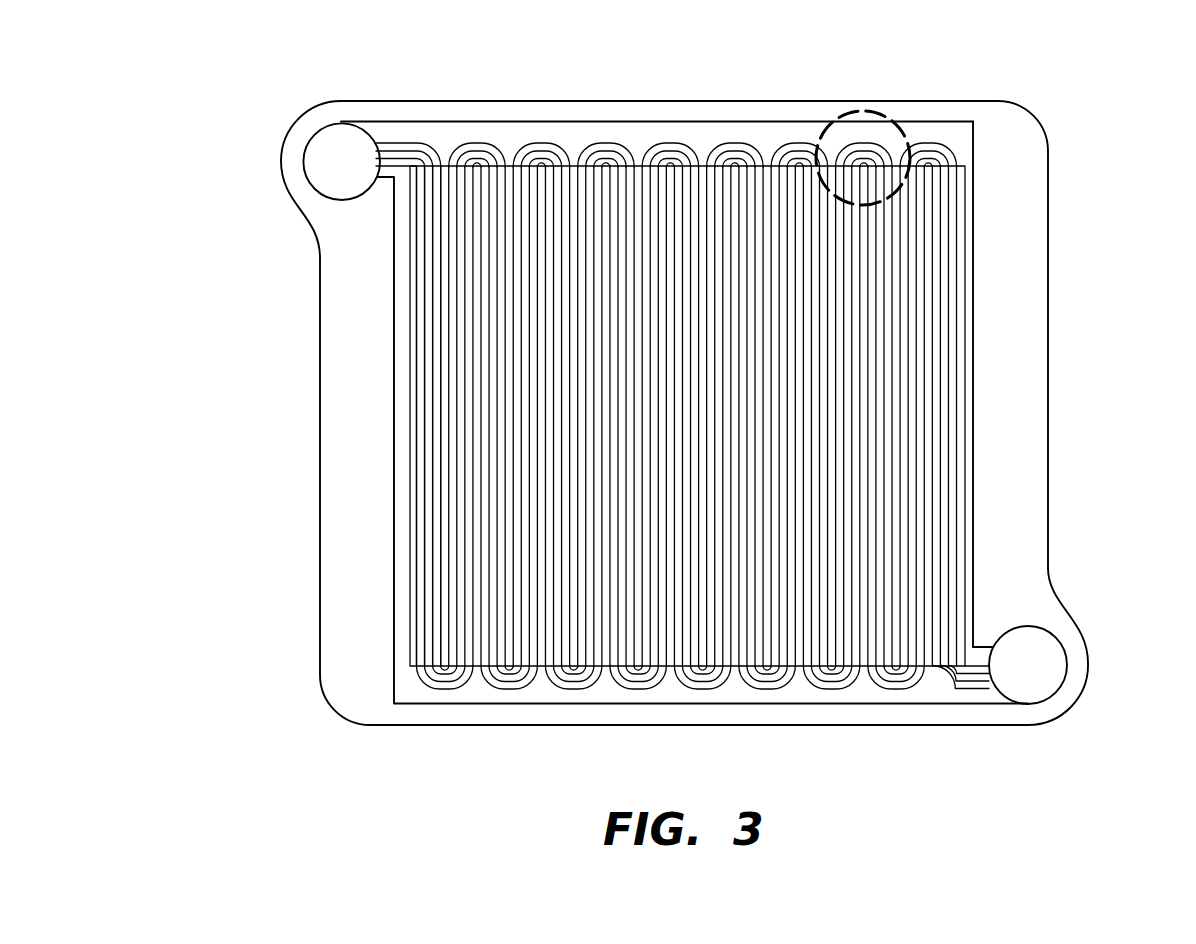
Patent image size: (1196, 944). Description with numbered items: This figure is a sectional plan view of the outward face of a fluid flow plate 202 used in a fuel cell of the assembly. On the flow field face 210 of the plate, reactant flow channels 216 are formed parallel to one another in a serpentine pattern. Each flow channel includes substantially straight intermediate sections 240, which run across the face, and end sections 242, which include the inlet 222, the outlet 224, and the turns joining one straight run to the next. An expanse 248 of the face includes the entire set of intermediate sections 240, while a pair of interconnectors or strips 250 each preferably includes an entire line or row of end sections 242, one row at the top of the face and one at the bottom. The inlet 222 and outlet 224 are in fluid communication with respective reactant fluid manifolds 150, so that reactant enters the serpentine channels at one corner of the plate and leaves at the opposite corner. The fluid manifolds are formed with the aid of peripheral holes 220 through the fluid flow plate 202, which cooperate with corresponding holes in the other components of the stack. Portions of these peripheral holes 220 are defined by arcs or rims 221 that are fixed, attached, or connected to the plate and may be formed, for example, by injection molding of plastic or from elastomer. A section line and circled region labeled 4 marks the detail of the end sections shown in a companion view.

The section view indicator 4 is at (862, 110).
The fluid manifold 150 is at (328, 137).
The fluid flow plate 202 is at (1175, 296).
The flow field face 210 is at (1048, 250).
The reactant flow channels 216 is at (413, 676).
The peripheral holes 220 is at (678, 379).
The rims 221 is at (287, 173).
The inlet 222 is at (387, 177).
The outlet 224 is at (980, 658).
The intermediate sections 240 is at (936, 337).
The end sections 242 is at (470, 143).
The expanse 248 is at (975, 217).
The strips 250 is at (965, 140).